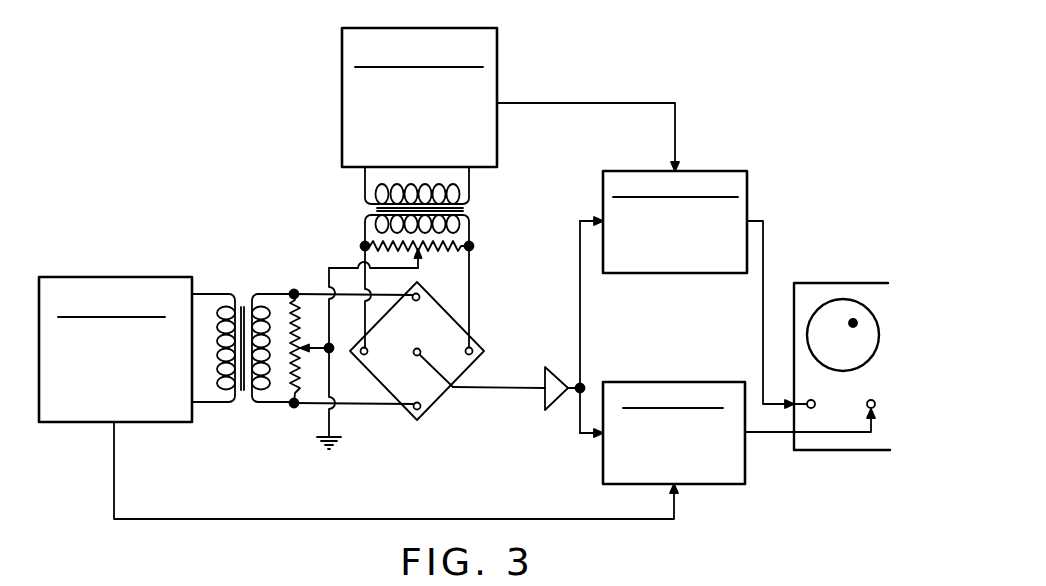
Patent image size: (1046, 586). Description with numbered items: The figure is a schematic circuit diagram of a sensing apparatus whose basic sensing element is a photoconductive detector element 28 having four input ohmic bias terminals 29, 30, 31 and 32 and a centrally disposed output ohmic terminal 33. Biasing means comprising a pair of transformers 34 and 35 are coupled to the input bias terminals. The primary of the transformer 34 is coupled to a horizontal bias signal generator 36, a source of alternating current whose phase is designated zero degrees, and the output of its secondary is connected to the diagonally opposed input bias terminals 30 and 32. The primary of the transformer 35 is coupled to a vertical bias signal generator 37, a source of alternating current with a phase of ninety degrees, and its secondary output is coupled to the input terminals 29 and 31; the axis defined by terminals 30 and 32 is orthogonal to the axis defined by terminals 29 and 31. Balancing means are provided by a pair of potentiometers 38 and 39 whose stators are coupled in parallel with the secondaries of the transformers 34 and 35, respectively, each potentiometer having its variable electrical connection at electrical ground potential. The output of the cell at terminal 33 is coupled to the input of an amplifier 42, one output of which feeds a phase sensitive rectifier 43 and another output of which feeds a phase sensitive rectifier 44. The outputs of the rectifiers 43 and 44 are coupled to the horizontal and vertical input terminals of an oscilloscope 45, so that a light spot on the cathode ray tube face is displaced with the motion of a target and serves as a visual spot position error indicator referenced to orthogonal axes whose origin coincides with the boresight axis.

The photoconductive detector element 28 is at (453, 329).
The input ohmic bias terminal 29 is at (421, 295).
The input ohmic bias terminal 30 is at (474, 347).
The input ohmic bias terminal 31 is at (420, 409).
The input ohmic bias terminal 32 is at (362, 355).
The output ohmic terminal 33 is at (419, 349).
The transformer 34 is at (472, 210).
The transformer 35 is at (246, 298).
The horizontal bias signal generator 36 is at (490, 52).
The vertical bias signal generator 37 is at (137, 278).
The potentiometer 38 is at (453, 255).
The potentiometer 39 is at (288, 383).
The amplifier 42 is at (552, 368).
The phase sensitive rectifier 43 is at (728, 171).
The phase sensitive rectifier 44 is at (725, 484).
The oscilloscope 45 is at (820, 282).